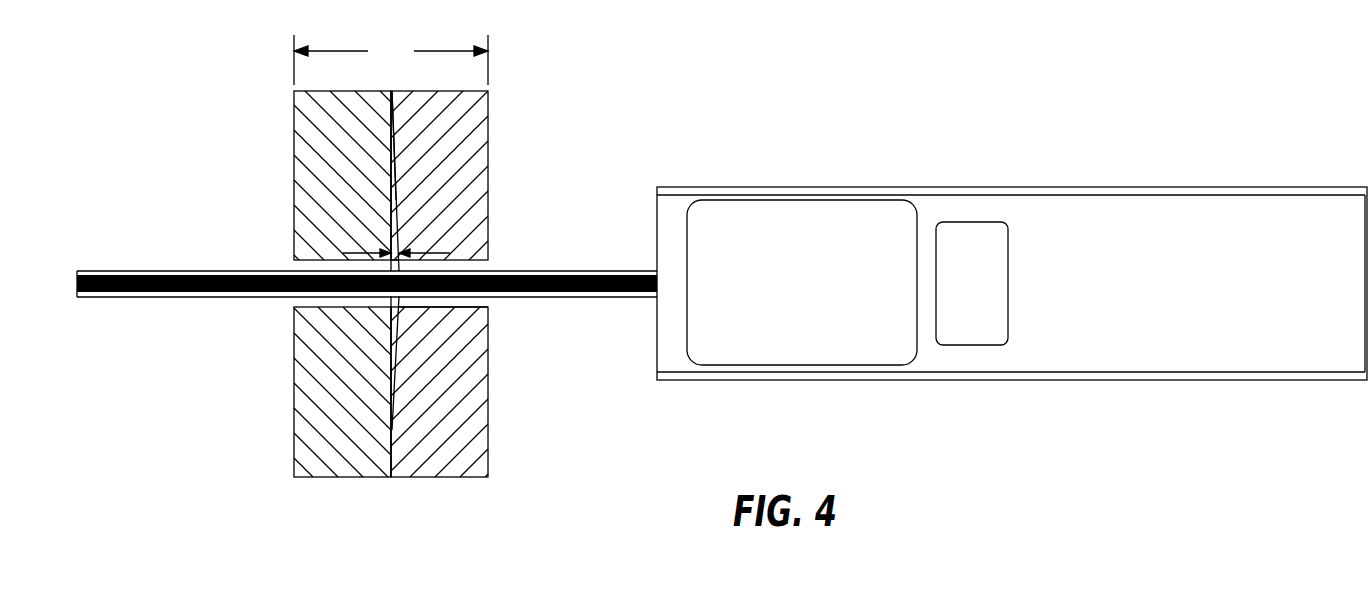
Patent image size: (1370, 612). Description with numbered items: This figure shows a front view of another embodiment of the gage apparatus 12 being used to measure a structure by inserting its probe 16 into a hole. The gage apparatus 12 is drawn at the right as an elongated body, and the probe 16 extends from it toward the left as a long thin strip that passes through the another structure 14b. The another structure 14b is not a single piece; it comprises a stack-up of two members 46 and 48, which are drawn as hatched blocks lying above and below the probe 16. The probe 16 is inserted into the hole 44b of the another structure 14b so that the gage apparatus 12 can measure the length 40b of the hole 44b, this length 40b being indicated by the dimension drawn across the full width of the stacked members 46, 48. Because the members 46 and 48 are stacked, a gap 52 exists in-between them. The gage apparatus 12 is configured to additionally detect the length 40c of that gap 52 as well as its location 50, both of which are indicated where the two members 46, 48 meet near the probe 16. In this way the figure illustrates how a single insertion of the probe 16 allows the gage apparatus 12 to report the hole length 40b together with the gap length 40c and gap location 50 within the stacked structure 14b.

The gage apparatus 12 is at (988, 187).
The probe 16 is at (168, 298).
The another structure 14b is at (393, 297).
The member 46 is at (313, 432).
The member 48 is at (467, 432).
The length 40b is at (391, 60).
The length 40c is at (435, 253).
The location 50 is at (388, 234).
The gap 52 is at (397, 264).
The hole 44b is at (468, 300).